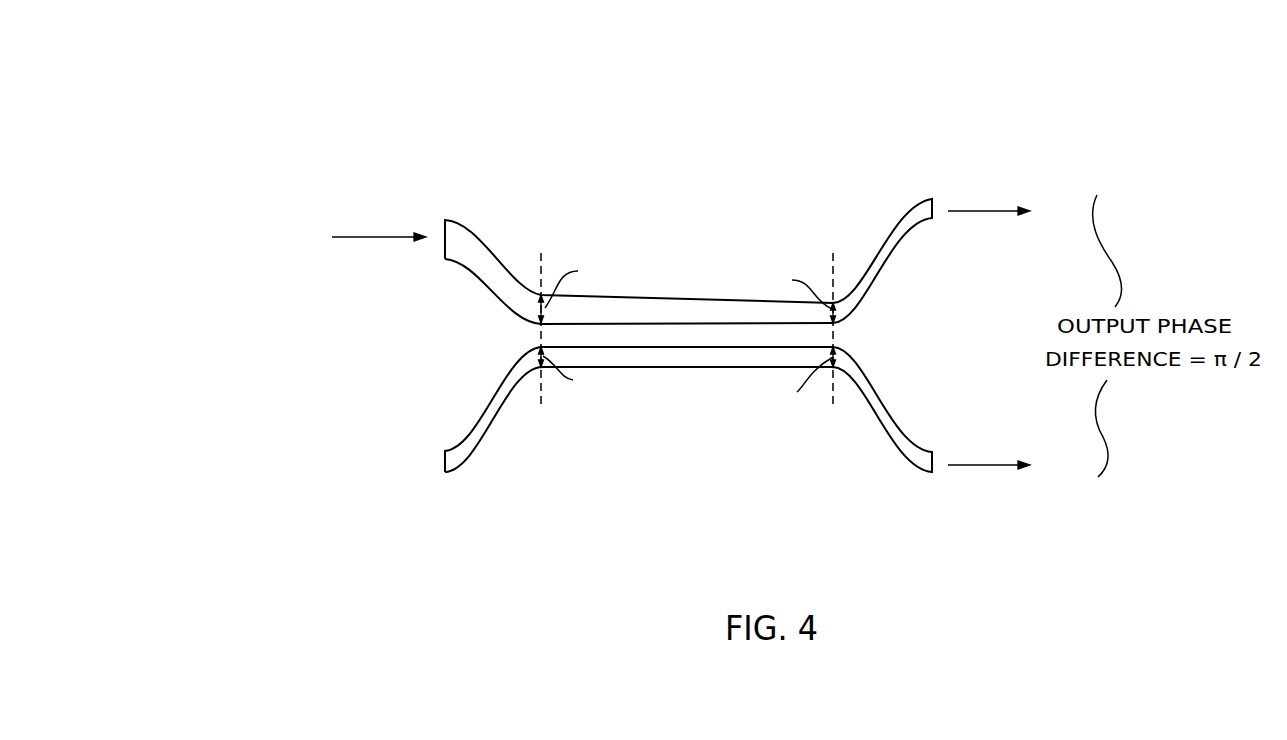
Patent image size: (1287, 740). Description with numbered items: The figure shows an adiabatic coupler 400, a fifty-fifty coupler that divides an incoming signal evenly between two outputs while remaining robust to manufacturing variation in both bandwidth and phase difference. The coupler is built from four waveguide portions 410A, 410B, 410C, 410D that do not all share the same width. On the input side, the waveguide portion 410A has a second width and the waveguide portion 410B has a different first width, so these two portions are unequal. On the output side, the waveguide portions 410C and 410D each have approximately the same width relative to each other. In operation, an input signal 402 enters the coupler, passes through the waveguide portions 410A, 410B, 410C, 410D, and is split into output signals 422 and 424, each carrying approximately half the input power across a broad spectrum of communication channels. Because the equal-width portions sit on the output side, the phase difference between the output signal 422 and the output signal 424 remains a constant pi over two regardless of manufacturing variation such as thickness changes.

The adiabatic coupler 400 is at (364, 90).
The input signal 402 is at (379, 200).
The waveguide portion 410A is at (549, 378).
The waveguide portion 410B is at (551, 280).
The waveguide portion 410C is at (824, 379).
The waveguide portion 410D is at (825, 296).
The output signal 422 is at (1059, 188).
The output signal 424 is at (1053, 488).